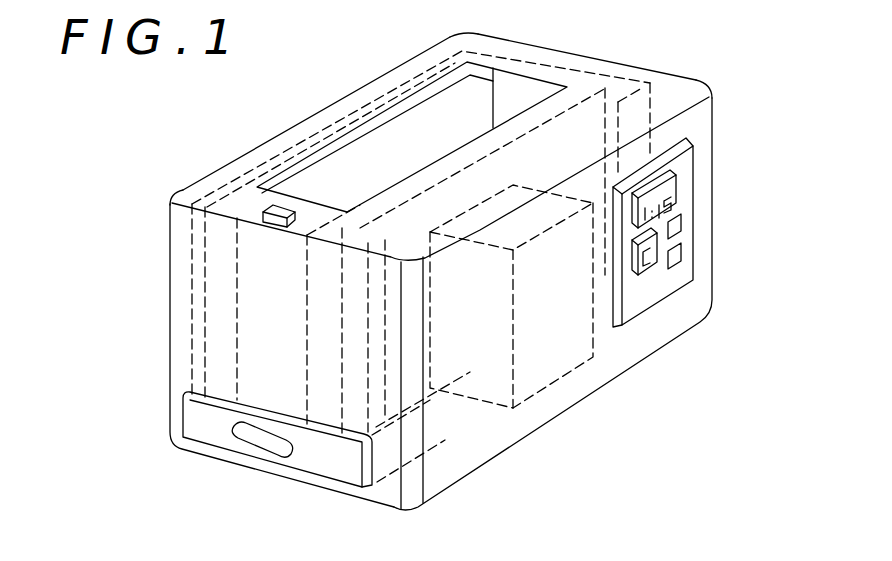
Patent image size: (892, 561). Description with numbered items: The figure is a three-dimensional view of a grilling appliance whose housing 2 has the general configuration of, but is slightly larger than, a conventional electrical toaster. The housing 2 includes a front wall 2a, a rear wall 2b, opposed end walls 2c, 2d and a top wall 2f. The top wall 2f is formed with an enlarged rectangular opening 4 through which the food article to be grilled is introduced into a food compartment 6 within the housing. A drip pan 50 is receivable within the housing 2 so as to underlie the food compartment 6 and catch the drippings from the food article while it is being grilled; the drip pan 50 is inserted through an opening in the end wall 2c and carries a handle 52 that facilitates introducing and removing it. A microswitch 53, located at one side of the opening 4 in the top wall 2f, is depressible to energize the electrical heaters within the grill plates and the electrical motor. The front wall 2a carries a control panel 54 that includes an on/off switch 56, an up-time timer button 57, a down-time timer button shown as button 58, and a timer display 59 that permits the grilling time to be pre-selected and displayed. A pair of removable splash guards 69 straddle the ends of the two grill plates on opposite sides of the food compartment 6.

The housing 2 is at (425, 266).
The front wall 2a is at (577, 385).
The rear wall 2b is at (237, 157).
The end wall 2c is at (173, 373).
The end wall 2d is at (660, 72).
The top wall 2f is at (323, 117).
The rectangular opening 4 is at (498, 97).
The food compartment 6 is at (432, 148).
The drip pan 50 is at (265, 467).
The handle 52 is at (243, 445).
The microswitch 53 is at (300, 202).
The control panel 54 is at (704, 249).
The on/off switch 56 is at (643, 270).
The up-time timer button 57 is at (683, 227).
The push button 58 is at (685, 258).
The timer display 59 is at (683, 183).
The splash guards 69 is at (588, 72).